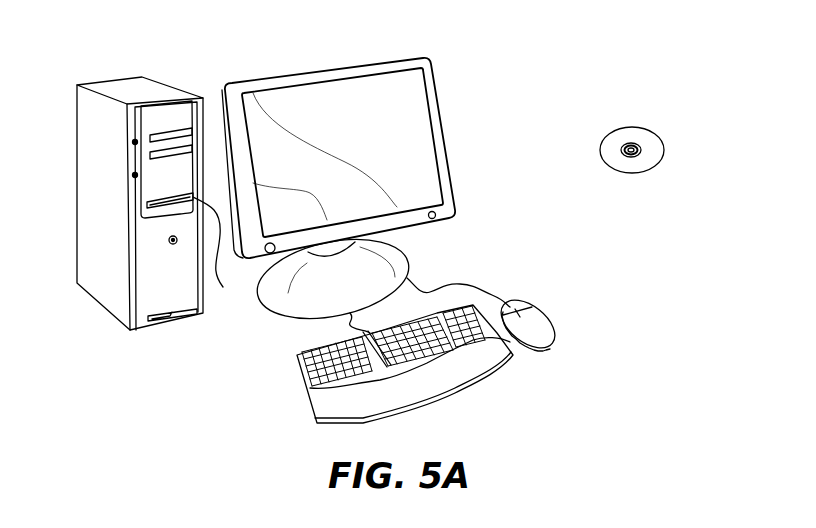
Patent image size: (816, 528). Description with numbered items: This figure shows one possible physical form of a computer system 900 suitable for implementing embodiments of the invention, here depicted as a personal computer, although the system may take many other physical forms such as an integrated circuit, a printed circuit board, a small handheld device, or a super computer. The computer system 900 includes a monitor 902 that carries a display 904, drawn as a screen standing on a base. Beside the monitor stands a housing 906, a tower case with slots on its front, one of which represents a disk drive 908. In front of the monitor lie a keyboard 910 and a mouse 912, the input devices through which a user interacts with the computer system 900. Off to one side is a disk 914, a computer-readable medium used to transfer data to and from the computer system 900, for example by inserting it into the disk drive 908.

The computer system 900 is at (557, 43).
The monitor 902 is at (445, 156).
The display 904 is at (402, 95).
The housing 906 is at (127, 88).
The disk drive 908 is at (222, 257).
The keyboard 910 is at (305, 392).
The mouse 912 is at (548, 312).
The disk 914 is at (648, 128).